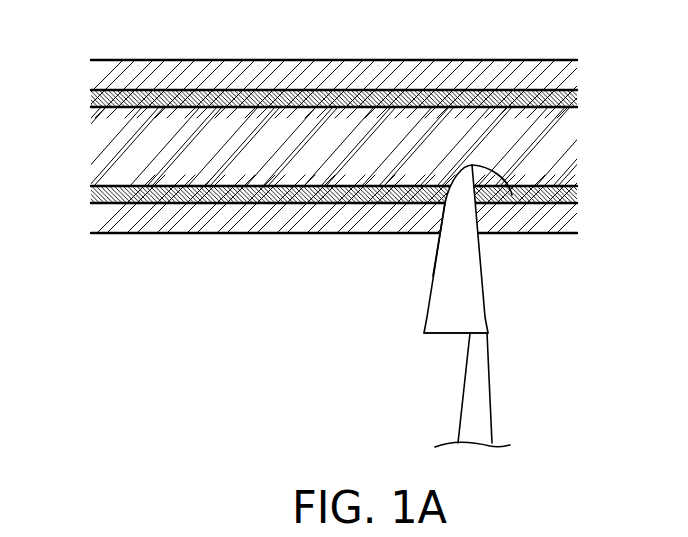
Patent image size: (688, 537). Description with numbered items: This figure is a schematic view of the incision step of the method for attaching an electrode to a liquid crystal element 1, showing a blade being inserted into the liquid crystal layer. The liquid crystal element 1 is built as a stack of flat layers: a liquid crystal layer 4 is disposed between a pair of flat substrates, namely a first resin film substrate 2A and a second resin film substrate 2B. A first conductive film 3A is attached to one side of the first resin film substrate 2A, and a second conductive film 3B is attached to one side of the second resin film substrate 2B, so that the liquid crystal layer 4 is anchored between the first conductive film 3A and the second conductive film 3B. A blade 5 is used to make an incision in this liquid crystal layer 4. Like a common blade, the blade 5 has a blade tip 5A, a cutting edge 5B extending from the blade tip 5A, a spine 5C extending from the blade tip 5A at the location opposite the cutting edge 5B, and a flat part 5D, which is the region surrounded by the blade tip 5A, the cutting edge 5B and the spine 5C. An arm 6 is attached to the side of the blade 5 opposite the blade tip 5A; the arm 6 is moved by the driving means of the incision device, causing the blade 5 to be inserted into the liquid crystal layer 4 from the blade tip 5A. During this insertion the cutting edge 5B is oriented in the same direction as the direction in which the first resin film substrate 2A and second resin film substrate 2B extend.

The liquid crystal element 1 is at (563, 0).
The first resin film substrate 2A is at (572, 72).
The second resin film substrate 2B is at (574, 215).
The first conductive film 3A is at (573, 100).
The second conductive film 3B is at (578, 188).
The liquid crystal layer 4 is at (108, 135).
The blade 5 is at (493, 271).
The blade tip 5A is at (512, 195).
The cutting edge 5B is at (431, 276).
The spine 5C is at (488, 300).
The flat part 5D is at (473, 303).
The arm 6 is at (490, 397).